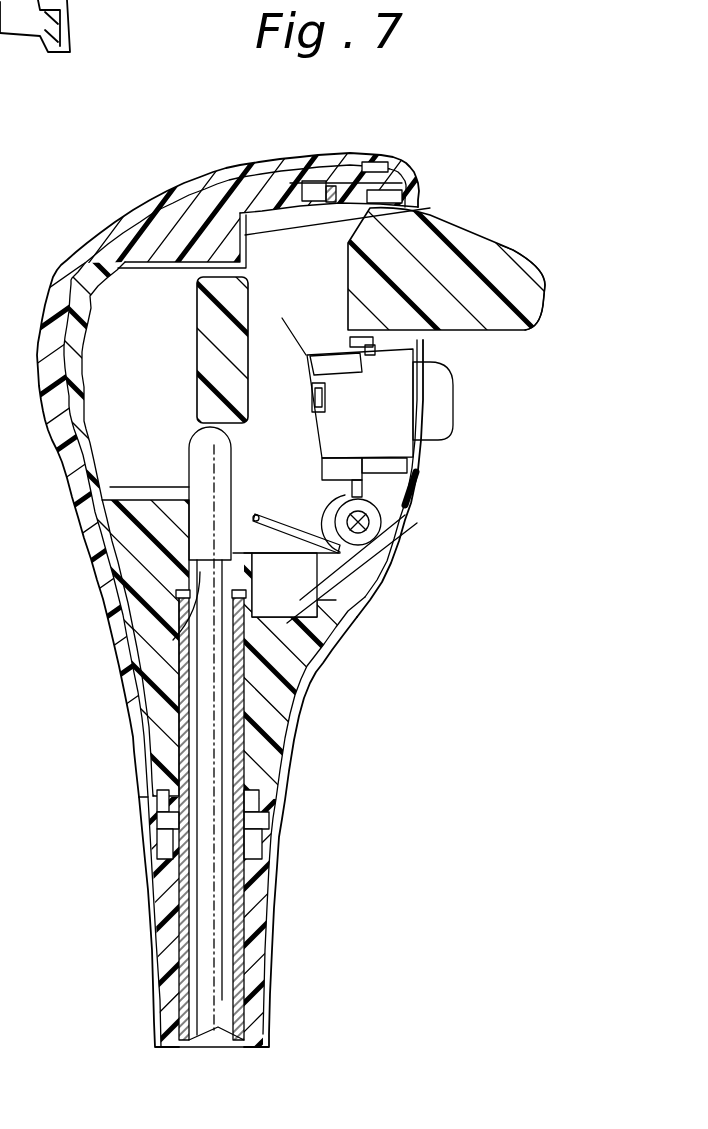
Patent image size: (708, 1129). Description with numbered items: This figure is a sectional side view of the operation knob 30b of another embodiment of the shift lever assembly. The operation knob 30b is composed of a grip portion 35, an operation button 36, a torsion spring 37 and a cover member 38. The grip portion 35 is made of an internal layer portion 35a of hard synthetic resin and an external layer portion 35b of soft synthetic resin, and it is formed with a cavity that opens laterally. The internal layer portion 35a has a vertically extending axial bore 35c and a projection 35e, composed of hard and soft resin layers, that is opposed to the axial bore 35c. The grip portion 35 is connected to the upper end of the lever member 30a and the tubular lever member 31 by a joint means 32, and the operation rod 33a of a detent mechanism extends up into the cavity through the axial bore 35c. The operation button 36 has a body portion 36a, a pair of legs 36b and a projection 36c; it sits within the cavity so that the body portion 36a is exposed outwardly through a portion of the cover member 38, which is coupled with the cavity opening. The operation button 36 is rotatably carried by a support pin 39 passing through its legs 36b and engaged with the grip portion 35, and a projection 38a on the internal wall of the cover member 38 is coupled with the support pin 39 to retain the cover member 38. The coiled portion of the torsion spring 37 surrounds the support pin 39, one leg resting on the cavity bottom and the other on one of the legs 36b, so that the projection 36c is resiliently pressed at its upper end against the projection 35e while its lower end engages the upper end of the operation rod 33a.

The lever member 30a is at (140, 952).
The operation knob 30b is at (168, 174).
The tubular lever member 31 is at (257, 988).
The joint means 32 is at (265, 823).
The operation rod 33a is at (217, 753).
The grip portion 35 is at (243, 160).
The internal layer portion 35a is at (130, 603).
The external layer portion 35b is at (92, 517).
The axial bore 35c is at (173, 640).
The projection 35e is at (192, 266).
The operation button 36 is at (447, 214).
The body portion 36a is at (524, 262).
The legs 36b is at (306, 355).
The projection 36c is at (213, 368).
The torsion spring 37 is at (320, 548).
The cover member 38 is at (430, 472).
The projection 38a is at (380, 521).
The support pin 39 is at (347, 549).